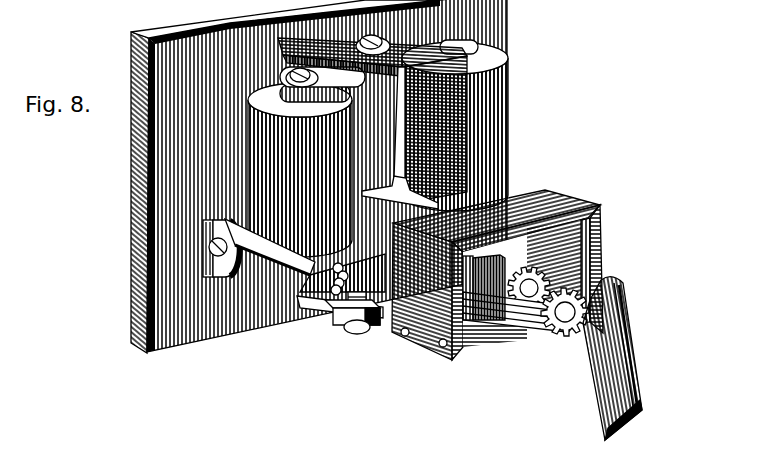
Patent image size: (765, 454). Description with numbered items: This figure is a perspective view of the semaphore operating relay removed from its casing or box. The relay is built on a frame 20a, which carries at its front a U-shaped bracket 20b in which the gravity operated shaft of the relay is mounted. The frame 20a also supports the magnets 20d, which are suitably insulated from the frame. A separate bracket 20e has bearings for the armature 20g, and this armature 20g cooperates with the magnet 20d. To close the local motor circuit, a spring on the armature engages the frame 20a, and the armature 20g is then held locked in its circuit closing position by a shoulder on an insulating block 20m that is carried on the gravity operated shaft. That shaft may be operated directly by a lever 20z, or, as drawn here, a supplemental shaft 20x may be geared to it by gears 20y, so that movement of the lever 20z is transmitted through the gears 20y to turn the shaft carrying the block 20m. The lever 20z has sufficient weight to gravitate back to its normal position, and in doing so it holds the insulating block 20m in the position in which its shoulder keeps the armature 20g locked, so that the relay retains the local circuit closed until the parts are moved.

The frame 20a is at (430, 43).
The front U-shaped bracket 20b is at (533, 194).
The magnets 20d is at (502, 99).
The bracket 20e is at (216, 279).
The armature 20g is at (293, 303).
The insulating block 20m is at (481, 322).
The supplemental shaft 20x is at (524, 332).
The gears 20y is at (526, 330).
The lever 20z is at (634, 371).